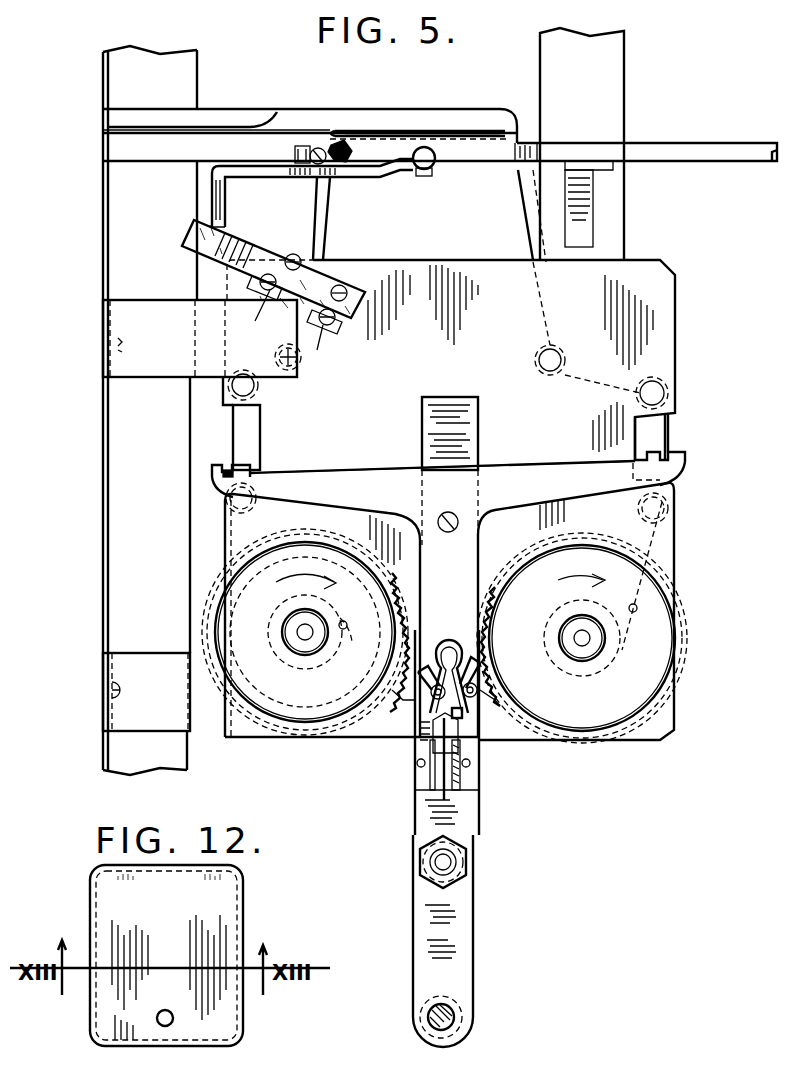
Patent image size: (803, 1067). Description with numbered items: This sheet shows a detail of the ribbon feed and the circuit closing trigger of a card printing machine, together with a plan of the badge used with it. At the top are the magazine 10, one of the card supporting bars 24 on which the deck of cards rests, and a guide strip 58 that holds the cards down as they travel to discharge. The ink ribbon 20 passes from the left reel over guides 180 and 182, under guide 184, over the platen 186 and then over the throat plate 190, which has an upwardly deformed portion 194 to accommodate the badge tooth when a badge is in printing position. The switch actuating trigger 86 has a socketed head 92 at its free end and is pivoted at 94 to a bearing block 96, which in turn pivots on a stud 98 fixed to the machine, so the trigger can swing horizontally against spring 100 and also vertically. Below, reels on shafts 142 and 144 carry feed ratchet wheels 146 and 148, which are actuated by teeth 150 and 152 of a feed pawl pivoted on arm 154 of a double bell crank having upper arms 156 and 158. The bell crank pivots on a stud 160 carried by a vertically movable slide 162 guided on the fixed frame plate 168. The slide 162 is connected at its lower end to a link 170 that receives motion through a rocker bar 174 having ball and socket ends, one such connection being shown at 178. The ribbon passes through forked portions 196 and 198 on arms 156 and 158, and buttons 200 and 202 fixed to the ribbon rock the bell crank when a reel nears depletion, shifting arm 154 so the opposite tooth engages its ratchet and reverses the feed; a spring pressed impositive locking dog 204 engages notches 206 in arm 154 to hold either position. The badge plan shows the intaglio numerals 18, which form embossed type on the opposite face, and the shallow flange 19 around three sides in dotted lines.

In FIG. 5, the magazine 10 is at (607, 112).
In FIG. 5, the card supporting bars 24 is at (710, 150).
In FIG. 5, the guide strips 58 is at (228, 125).
In FIG. 5, the platen 186 is at (393, 132).
In FIG. 5, the upwardly deformed portion 194 is at (423, 131).
In FIG. 5, the throat plate 190 is at (470, 150).
In FIG. 5, the bearing block 96 is at (294, 155).
In FIG. 5, the pivot 94 is at (318, 147).
In FIG. 5, the spring 100 is at (341, 148).
In FIG. 5, the switch actuating trigger 86 is at (375, 178).
In FIG. 5, the head 92 is at (432, 176).
In FIG. 5, the stud 98 is at (318, 178).
In FIG. 5, the fixed frame plate 168 is at (662, 318).
In FIG. 5, the ink ribbon 20 is at (475, 135).
In FIG. 5, the guide 184 is at (280, 356).
In FIG. 5, the guide 182 is at (259, 391).
In FIG. 5, the vertically movable slide 162 is at (470, 410).
In FIG. 5, the forked portion 196 is at (212, 472).
In FIG. 5, the forked portion 198 is at (685, 458).
In FIG. 5, the upper arm 156 is at (305, 473).
In FIG. 5, the upper arm 158 is at (560, 470).
In FIG. 5, the arm 154 is at (468, 554).
In FIG. 5, the guide 180 is at (241, 510).
In FIG. 5, the stud 160 is at (455, 520).
In FIG. 5, the shaft 142 is at (300, 632).
In FIG. 5, the button 200 is at (340, 645).
In FIG. 5, the shaft 144 is at (586, 639).
In FIG. 5, the button 202 is at (637, 609).
In FIG. 5, the pawl tooth 150 is at (436, 645).
In FIG. 5, the pawl tooth 152 is at (470, 660).
In FIG. 5, the spring pressed impositive locking dog 204 is at (430, 752).
In FIG. 5, the notches 206 is at (470, 717).
In FIG. 5, the feed ratchet wheel 146 is at (402, 712).
In FIG. 5, the feed ratchet wheel 148 is at (490, 700).
In FIG. 5, the link 170 is at (475, 938).
In FIG. 5, the connection 178 is at (451, 860).
In FIG. 5, the rocker bar 174 is at (455, 1018).
In FIG. 12, the flange 19 is at (96, 1010).
In FIG. 12, the numerals 18 is at (180, 905).